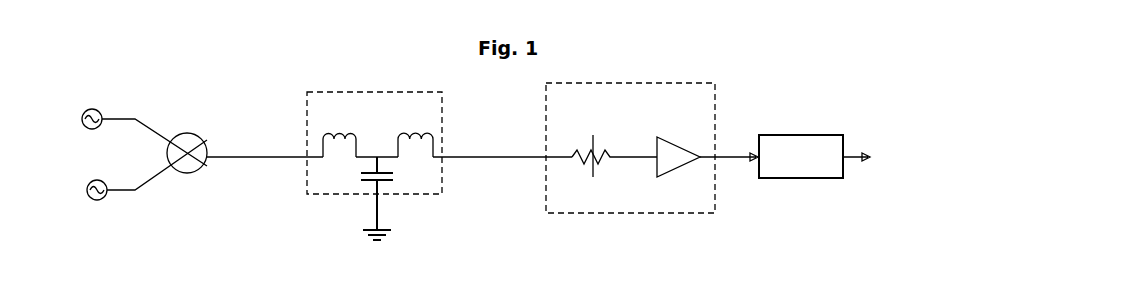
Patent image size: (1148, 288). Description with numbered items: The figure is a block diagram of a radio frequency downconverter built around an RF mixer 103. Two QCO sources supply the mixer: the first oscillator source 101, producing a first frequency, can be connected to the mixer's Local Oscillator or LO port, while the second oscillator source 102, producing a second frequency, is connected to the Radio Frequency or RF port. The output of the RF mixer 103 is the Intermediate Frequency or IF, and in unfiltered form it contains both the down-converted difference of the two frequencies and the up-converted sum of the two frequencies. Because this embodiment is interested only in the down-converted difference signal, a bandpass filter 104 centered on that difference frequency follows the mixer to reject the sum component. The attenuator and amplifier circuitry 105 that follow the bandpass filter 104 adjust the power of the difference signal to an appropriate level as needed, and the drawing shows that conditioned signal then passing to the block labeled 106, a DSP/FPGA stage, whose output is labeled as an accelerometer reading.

The Osc_1 source 101 is at (88, 107).
The Osc_2 source 102 is at (93, 201).
The RF mixer 103 is at (180, 132).
The bandpass filter 104 is at (353, 92).
The attenuator and amplifier circuitry 105 is at (627, 83).
The DSP/FPGA processor 106 is at (822, 134).